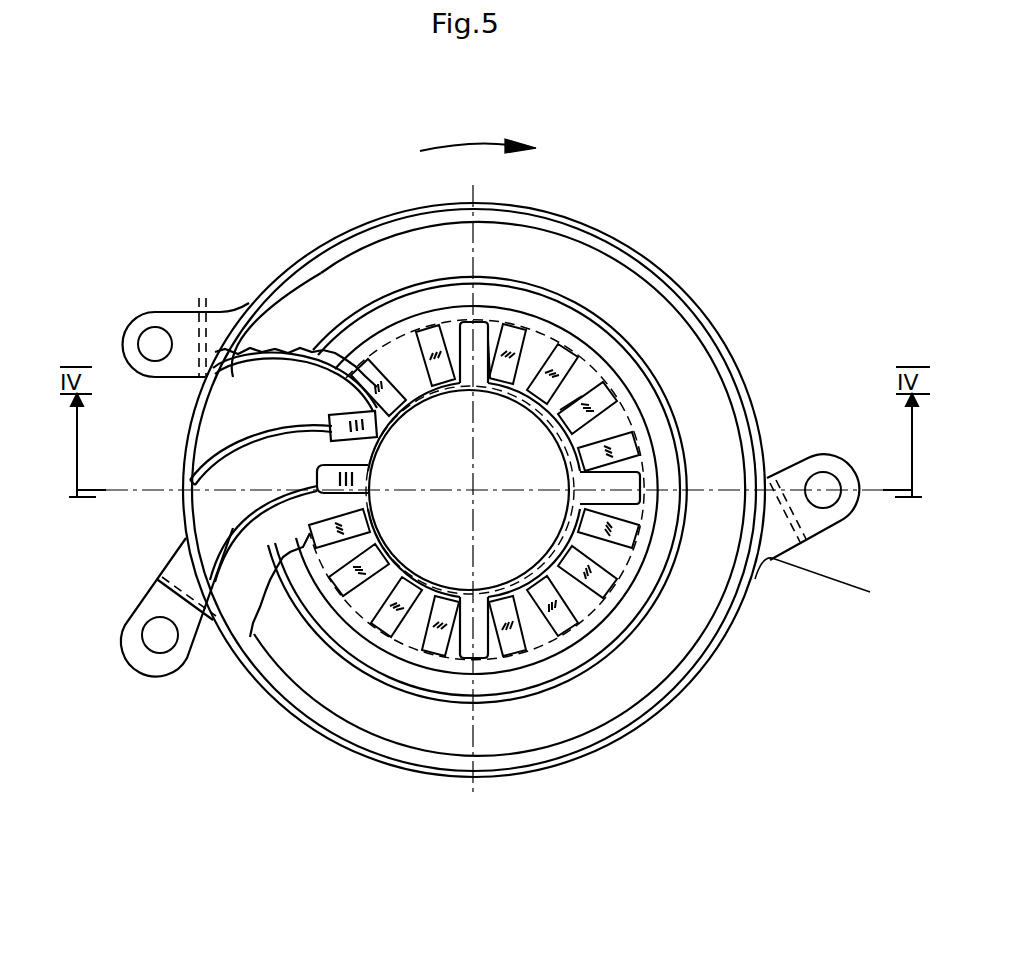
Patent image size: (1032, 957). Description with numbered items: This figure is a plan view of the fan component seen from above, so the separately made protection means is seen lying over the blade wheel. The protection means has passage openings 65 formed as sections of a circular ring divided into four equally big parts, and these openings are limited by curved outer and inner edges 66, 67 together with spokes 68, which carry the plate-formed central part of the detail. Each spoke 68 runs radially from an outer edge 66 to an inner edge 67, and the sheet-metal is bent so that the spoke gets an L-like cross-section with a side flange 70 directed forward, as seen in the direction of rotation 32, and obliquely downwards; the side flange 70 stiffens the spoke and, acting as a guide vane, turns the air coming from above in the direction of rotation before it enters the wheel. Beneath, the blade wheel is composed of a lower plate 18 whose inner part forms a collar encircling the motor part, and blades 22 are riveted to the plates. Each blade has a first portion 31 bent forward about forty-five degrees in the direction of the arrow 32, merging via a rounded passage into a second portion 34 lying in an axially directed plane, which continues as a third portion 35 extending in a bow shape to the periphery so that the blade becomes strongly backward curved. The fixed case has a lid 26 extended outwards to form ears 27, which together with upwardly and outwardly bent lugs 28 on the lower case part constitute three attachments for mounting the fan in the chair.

The lower plate 18 is at (300, 405).
The blades 22 is at (205, 447).
The lid 26 is at (683, 350).
The ears 27 is at (217, 322).
The lugs 28 is at (195, 325).
The first blade portion 31 is at (329, 417).
The arrow indicating direction of rotation 32 is at (480, 135).
The second blade portion 34 is at (312, 432).
The third blade portion 35 is at (225, 533).
The passage openings 65 is at (578, 600).
The outer edges 66 is at (632, 333).
The inner edges 67 is at (598, 385).
The spokes 68 is at (477, 337).
The side flange 70 is at (492, 348).